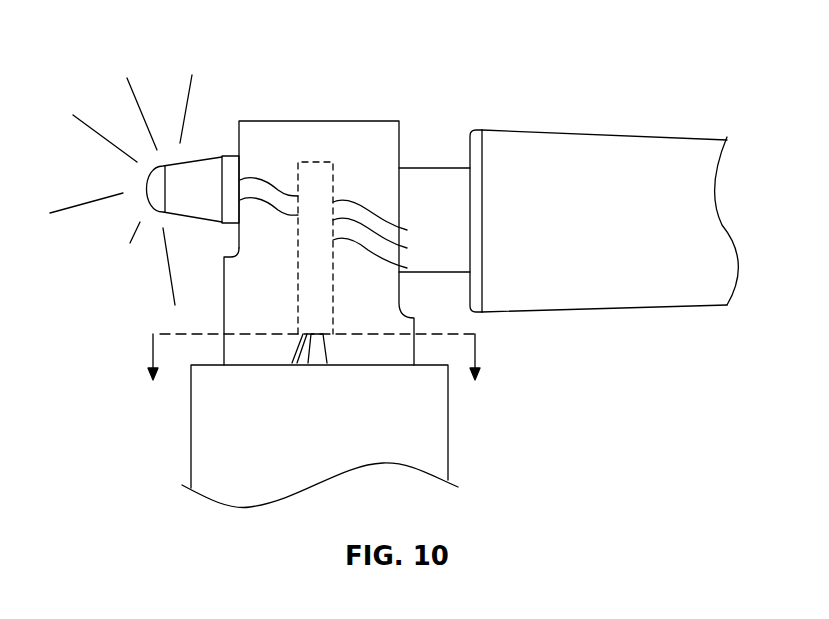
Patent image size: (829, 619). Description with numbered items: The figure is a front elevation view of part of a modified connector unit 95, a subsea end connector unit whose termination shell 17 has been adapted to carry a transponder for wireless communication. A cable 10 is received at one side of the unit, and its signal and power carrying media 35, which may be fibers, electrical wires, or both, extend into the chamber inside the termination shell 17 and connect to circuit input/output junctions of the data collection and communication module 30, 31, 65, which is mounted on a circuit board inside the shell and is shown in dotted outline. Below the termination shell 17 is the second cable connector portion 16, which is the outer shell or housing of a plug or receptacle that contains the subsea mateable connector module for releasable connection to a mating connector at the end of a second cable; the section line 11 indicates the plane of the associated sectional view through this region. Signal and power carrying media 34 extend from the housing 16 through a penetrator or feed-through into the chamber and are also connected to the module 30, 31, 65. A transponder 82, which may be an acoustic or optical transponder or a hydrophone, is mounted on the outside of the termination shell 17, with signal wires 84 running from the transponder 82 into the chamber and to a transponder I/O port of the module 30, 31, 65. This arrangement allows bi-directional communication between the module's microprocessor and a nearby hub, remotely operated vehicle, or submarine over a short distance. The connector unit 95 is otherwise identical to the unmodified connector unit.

The cable 10 is at (553, 157).
The cable 11 is at (313, 373).
The second cable connector portion 16 is at (435, 425).
The termination shell 17 is at (273, 128).
The data collection and communication module 30 is at (340, 197).
The data collection and communication module 31 is at (340, 197).
The signal and power carrying media 34 is at (327, 352).
The signal and power carrying media 35 is at (380, 217).
The data collection and communication module 65 is at (302, 158).
The transponder 82 is at (188, 172).
The signal wires 84 is at (253, 177).
The modified connector unit 95 is at (677, 48).